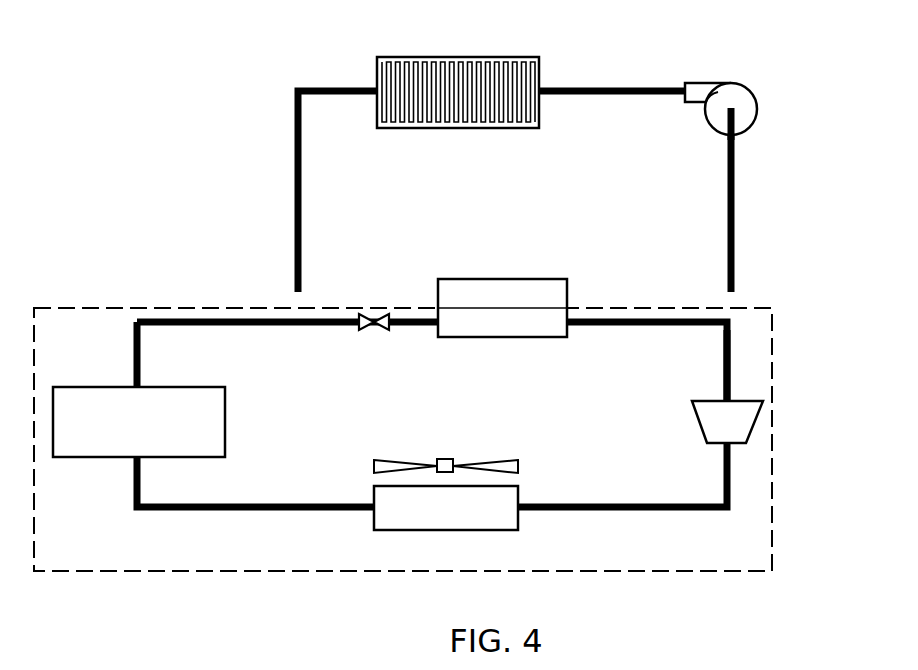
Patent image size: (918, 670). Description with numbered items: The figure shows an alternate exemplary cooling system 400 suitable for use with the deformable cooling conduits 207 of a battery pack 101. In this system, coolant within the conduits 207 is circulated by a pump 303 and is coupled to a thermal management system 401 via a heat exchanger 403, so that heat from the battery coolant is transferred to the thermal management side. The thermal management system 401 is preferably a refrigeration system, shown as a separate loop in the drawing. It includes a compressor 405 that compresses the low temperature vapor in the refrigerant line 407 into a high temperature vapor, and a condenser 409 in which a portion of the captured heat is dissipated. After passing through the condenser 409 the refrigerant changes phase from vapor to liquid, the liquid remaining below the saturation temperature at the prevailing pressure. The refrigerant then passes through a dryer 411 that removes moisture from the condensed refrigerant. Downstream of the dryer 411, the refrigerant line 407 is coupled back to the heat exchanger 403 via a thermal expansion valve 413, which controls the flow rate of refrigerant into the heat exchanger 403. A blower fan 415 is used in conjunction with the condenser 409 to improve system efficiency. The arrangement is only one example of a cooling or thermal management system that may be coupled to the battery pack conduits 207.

The cooling system 400 is at (810, 143).
The thermal management system 401 is at (775, 428).
The battery pack 101 is at (445, 57).
The cooling conduits 207 is at (400, 75).
The pump 303 is at (705, 109).
The heat exchanger 403 is at (480, 279).
The compressor 405 is at (694, 413).
The refrigerant line 407 is at (722, 343).
The condenser 409 is at (520, 502).
The dryer 411 is at (197, 387).
The thermal expansion valve 413 is at (368, 327).
The blower fan 415 is at (445, 460).